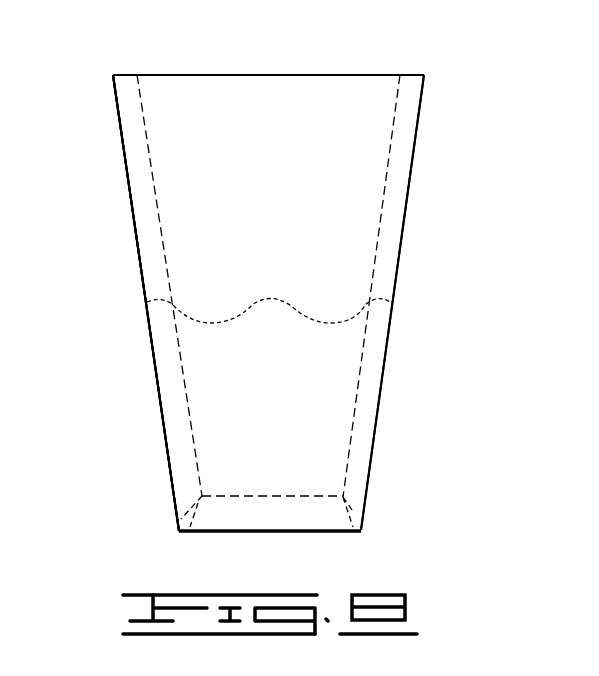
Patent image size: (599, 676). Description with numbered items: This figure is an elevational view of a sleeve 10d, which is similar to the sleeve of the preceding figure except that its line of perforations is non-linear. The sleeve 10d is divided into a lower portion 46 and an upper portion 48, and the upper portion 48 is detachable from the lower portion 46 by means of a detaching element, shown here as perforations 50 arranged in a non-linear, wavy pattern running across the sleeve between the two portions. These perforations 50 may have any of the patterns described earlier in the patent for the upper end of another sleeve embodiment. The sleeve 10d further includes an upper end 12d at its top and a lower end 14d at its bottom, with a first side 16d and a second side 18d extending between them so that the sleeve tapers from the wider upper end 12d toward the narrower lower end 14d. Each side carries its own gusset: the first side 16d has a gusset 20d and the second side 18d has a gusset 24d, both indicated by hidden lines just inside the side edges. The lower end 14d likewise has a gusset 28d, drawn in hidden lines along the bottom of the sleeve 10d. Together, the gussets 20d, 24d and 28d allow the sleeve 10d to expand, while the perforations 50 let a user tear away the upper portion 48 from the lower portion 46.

The sleeve 10d is at (437, 203).
The upper end 12d is at (200, 75).
The lower end 14d is at (330, 531).
The first side 16d is at (126, 160).
The second side 18d is at (417, 143).
The gusset 20d is at (137, 98).
The gusset 24d is at (410, 93).
The gusset 28d is at (350, 500).
The lower portion 46 is at (160, 412).
The upper portion 48 is at (135, 233).
The perforations 50 is at (330, 323).